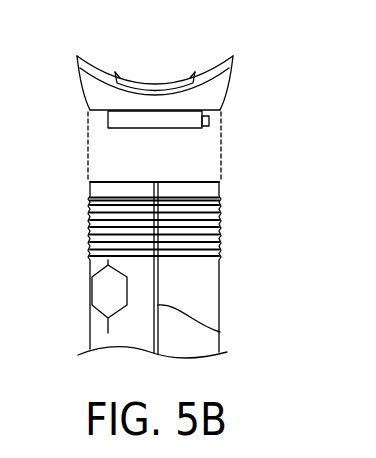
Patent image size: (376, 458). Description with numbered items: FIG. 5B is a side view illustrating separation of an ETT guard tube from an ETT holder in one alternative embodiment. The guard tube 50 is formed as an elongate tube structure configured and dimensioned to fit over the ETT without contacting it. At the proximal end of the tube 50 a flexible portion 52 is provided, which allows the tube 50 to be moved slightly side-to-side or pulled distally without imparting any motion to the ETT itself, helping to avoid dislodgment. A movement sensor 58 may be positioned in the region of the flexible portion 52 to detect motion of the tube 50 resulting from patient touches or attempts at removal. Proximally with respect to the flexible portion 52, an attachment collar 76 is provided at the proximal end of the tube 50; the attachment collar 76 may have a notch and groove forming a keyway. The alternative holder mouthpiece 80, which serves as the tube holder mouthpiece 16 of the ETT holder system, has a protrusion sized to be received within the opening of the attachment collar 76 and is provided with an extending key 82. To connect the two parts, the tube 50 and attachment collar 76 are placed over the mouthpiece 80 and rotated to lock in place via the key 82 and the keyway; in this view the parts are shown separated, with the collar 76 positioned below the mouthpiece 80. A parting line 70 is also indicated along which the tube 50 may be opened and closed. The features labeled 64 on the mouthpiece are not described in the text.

The tube holder mouthpiece 16 is at (126, 76).
The guard tube 50 is at (210, 283).
The flexible portion 52 is at (217, 222).
The movement sensor 58 is at (102, 290).
The arms 64 is at (77, 55).
The parting line 70 is at (220, 332).
The attachment collar 76 is at (217, 192).
The holder mouthpiece 80 is at (83, 88).
The key 82 is at (210, 121).